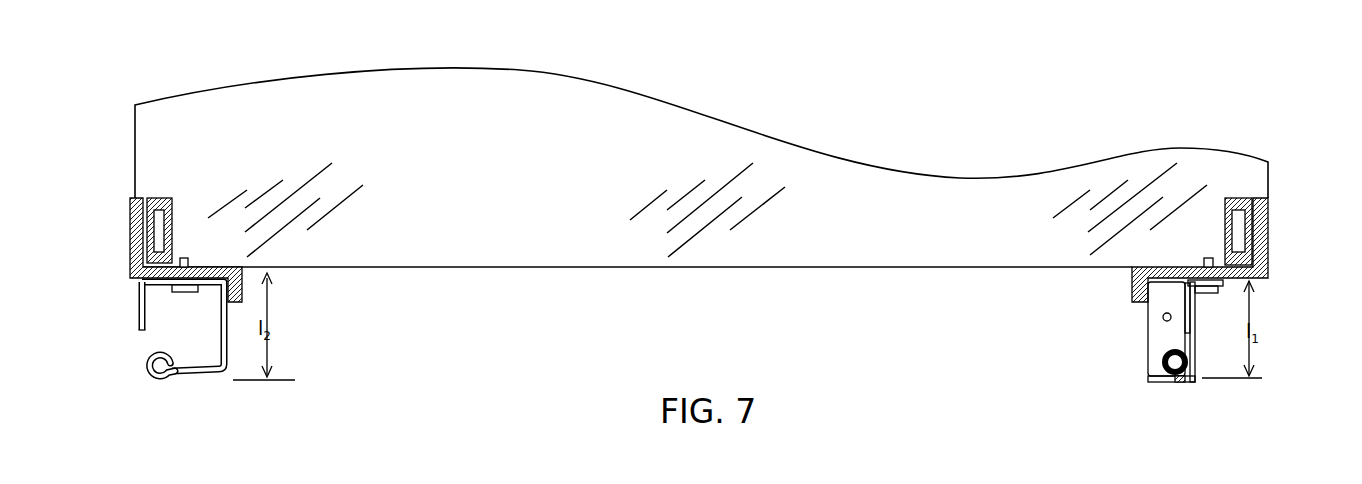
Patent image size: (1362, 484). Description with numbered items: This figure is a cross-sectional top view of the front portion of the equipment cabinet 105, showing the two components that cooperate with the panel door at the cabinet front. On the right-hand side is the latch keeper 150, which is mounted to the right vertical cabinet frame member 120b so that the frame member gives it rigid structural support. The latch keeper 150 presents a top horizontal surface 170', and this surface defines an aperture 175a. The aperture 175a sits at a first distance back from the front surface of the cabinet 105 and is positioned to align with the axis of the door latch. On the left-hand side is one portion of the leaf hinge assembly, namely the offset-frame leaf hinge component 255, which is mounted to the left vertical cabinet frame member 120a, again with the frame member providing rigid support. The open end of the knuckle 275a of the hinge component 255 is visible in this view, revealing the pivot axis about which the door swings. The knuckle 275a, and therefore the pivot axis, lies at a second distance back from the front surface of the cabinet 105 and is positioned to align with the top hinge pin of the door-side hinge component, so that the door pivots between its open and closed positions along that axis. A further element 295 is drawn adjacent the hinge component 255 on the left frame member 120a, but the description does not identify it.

The equipment cabinet 105 is at (560, 80).
The left vertical cabinet frame member 120a is at (128, 222).
The right vertical cabinet frame member 120b is at (1272, 245).
The offset-frame leaf hinge component 255 is at (216, 393).
The bracket tab 295 is at (134, 303).
The knuckle 275a is at (146, 373).
The top horizontal surface 170' is at (1161, 331).
The aperture 175a is at (1160, 362).
The latch keeper 150 is at (1163, 382).